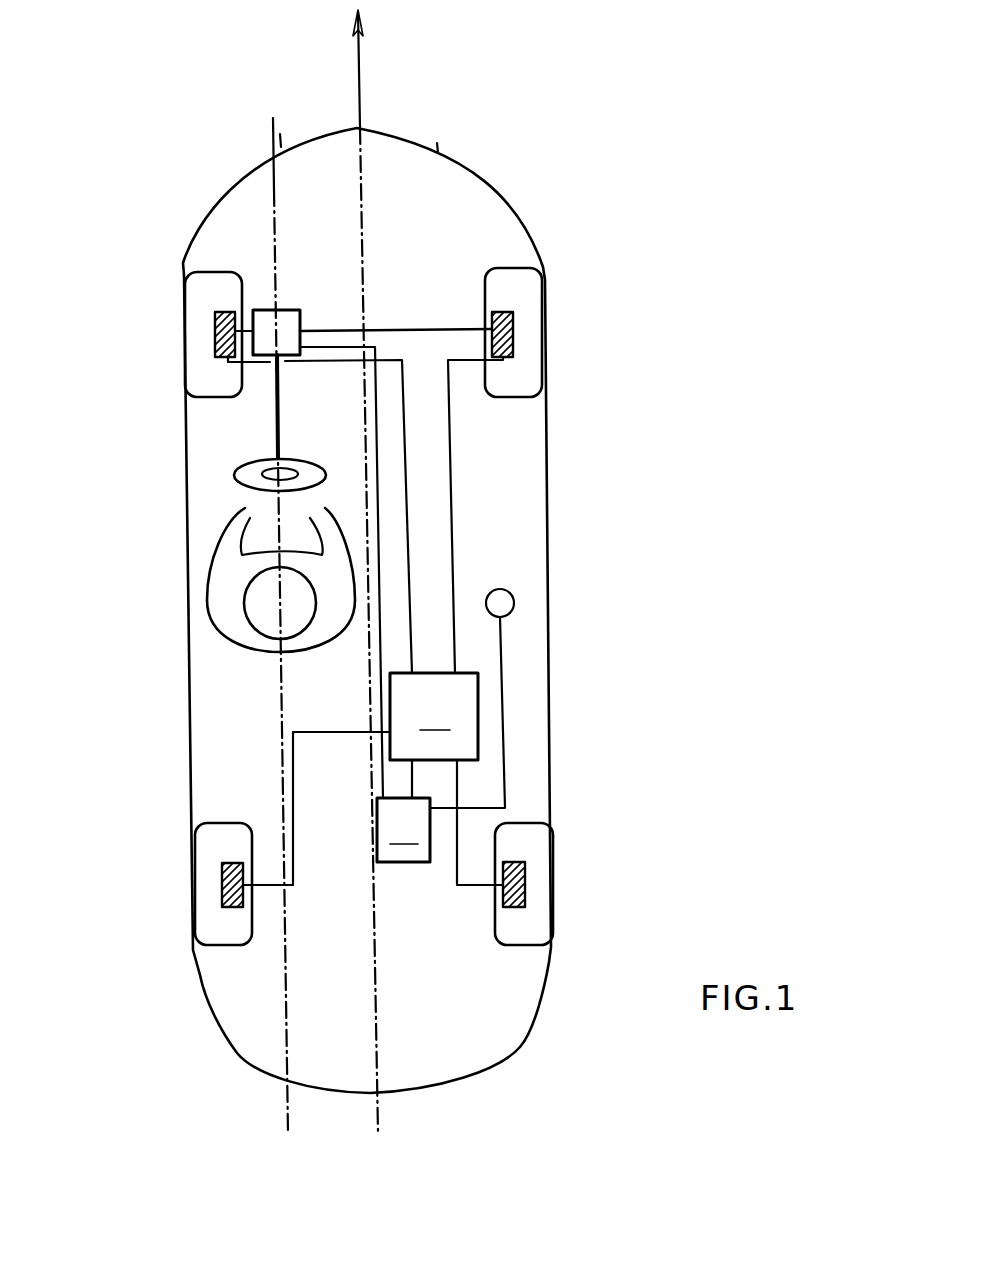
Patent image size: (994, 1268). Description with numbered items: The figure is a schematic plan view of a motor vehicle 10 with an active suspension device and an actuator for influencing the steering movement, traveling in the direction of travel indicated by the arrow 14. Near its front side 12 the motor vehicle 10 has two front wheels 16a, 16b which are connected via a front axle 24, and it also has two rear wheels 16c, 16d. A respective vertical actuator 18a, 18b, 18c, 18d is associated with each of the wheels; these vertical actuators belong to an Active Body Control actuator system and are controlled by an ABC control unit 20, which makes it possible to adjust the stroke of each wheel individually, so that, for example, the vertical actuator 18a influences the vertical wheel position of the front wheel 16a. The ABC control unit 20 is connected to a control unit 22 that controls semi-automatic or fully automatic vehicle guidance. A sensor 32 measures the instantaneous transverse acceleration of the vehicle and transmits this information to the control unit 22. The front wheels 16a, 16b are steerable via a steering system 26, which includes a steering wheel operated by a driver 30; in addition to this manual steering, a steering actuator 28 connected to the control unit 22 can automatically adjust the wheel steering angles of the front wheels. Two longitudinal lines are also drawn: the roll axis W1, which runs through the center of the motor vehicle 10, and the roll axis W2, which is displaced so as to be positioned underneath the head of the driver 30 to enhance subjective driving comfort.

The motor vehicle 10 is at (455, 584).
The front side 12 is at (459, 148).
The arrow 14 is at (362, 58).
The front wheel 16a is at (206, 266).
The front wheel 16b is at (511, 264).
The rear wheel 16c is at (222, 815).
The rear wheel 16d is at (531, 818).
The vertical actuator 18a is at (213, 322).
The vertical actuator 18b is at (515, 318).
The vertical actuator 18c is at (220, 896).
The vertical actuator 18d is at (527, 884).
The ABC control unit 20 is at (373, 779).
The control unit 22 is at (441, 739).
The front axle 24 is at (416, 326).
The steering system 26 is at (228, 472).
The steering actuator 28 is at (265, 307).
The driver 30 is at (221, 644).
The sensor 32 is at (514, 597).
The roll axis W1 is at (382, 1117).
The roll axis W2 is at (285, 1118).